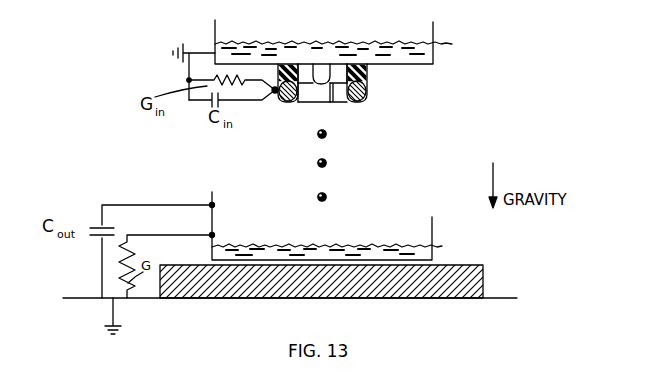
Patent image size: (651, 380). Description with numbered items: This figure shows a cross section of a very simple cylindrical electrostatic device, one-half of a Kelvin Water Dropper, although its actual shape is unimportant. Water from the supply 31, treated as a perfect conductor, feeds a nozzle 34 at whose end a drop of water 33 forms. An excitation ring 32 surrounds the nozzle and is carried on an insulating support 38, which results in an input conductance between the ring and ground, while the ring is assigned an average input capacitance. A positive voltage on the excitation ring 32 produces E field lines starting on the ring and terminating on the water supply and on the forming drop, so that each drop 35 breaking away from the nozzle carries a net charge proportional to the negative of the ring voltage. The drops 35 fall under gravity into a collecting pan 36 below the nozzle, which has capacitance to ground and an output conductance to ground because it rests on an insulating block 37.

The water supply 31 is at (433, 46).
The excitation ring 32 is at (368, 94).
The drop of water 33 is at (322, 100).
The nozzle 34 is at (322, 76).
The drop 35 is at (318, 193).
The collecting pan 36 is at (433, 240).
The insulating block 37 is at (258, 299).
The insulating support 38 is at (368, 83).